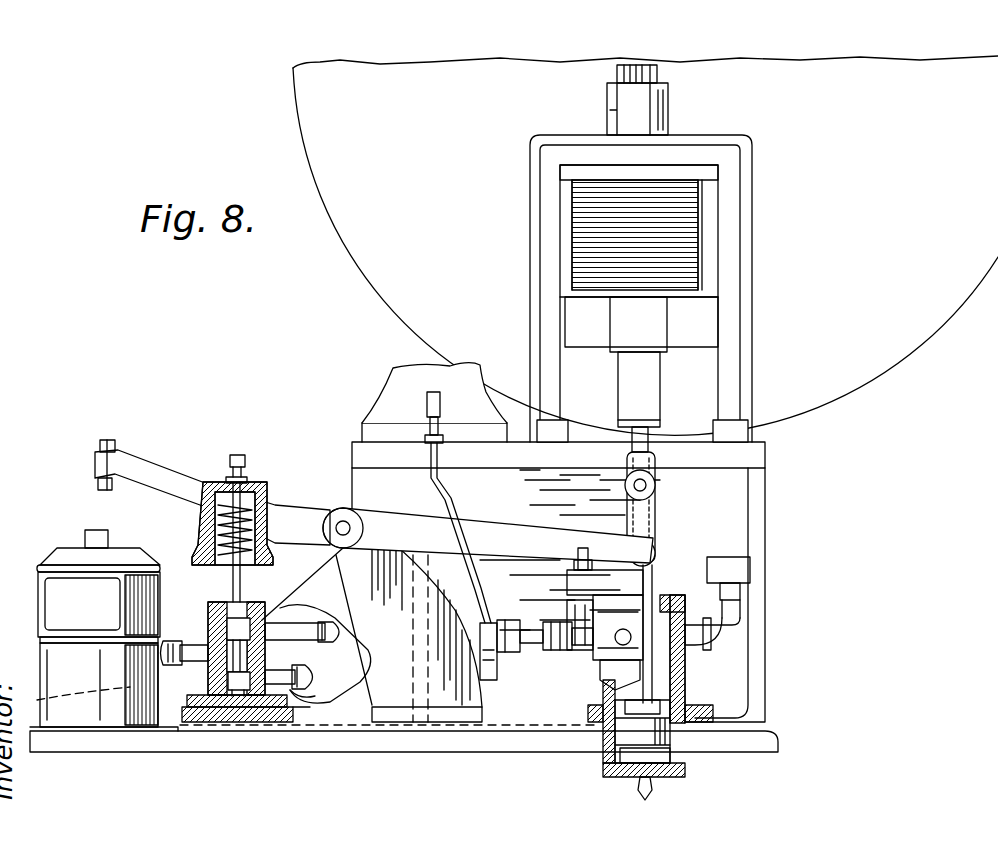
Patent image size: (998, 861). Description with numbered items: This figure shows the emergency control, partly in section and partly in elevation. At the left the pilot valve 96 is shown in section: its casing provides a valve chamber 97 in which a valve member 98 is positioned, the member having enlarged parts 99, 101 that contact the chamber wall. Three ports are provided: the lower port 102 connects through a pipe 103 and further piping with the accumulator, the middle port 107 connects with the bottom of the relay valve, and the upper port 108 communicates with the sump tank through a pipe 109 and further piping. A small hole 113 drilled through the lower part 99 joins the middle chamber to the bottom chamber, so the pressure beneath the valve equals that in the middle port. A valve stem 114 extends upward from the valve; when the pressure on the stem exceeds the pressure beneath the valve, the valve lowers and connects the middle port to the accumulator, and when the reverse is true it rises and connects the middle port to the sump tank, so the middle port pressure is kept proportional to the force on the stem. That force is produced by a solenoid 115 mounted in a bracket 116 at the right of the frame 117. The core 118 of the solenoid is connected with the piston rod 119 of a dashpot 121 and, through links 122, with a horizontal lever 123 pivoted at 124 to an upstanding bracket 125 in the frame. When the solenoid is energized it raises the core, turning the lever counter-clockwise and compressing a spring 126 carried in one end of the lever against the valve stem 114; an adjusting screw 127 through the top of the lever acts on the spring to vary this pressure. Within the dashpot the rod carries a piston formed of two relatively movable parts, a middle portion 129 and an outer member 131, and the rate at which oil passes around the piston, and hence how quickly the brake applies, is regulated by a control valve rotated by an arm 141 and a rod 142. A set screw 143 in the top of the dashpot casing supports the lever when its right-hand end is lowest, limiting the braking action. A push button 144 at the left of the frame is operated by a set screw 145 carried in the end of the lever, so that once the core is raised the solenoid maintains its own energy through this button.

The pilot valve 96 is at (210, 665).
The valve chamber 97 is at (285, 675).
The valve member 98 is at (300, 630).
The enlarged part 99 is at (228, 681).
The enlarged part 101 is at (227, 626).
The port 102 is at (290, 710).
The pipe 103 is at (315, 692).
The middle port 107 is at (210, 650).
The upper port 108 is at (265, 612).
The pipe 109 is at (312, 620).
The small hole 113 is at (185, 728).
The valve stem 114 is at (232, 580).
The solenoid 115 is at (705, 287).
The bracket 116 is at (745, 345).
The frame 117 is at (762, 490).
The core 118 is at (640, 448).
The piston rod 119 is at (652, 582).
The dashpot 121 is at (683, 677).
The links 122 is at (657, 521).
The horizontal lever 123 is at (528, 503).
The pivot 124 is at (345, 508).
The upstanding bracket 125 is at (378, 533).
The spring 126 is at (215, 525).
The adjusting screw 127 is at (230, 455).
The middle portion of piston 129 is at (650, 700).
The outer member of piston 131 is at (660, 755).
The arm 141 is at (520, 662).
The rod 142 is at (452, 500).
The set screw 143 is at (575, 545).
The push button 144 is at (75, 548).
The set screw 145 is at (93, 468).